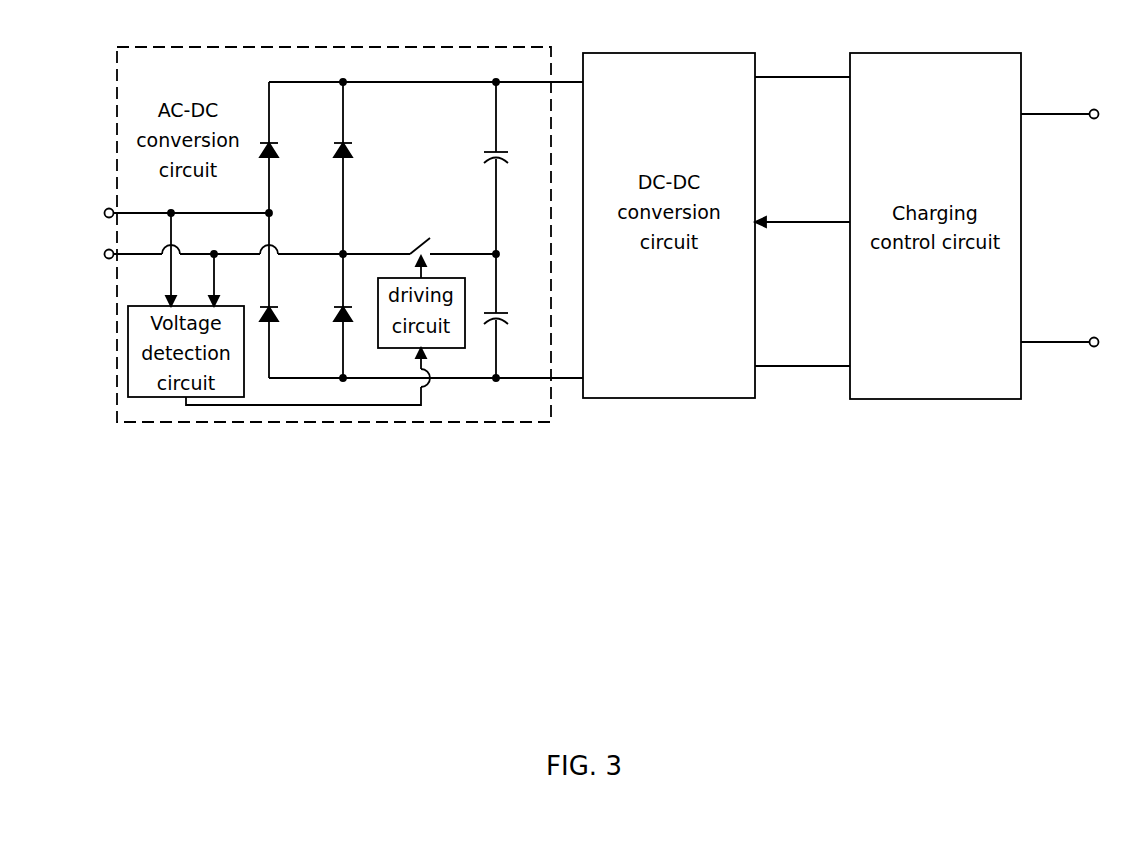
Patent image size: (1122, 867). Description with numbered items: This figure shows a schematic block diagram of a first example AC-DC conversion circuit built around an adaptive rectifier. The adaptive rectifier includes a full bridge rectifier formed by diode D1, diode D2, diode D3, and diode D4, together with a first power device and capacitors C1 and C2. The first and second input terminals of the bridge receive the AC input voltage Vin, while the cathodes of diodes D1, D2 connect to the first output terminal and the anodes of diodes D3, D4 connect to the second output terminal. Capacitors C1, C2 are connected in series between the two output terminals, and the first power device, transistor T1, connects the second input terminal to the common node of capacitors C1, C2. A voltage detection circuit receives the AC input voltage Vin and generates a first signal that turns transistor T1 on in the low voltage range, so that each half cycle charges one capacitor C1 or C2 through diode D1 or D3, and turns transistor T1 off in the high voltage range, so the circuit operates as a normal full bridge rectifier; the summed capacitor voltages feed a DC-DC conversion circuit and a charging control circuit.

The AC input voltage Vin is at (209, 234).
The diode D1 is at (284, 147).
The diode D2 is at (359, 168).
The diode D3 is at (285, 295).
The diode D4 is at (353, 316).
The capacitor C1 is at (510, 168).
The capacitor C2 is at (510, 316).
The transistor T1 is at (421, 234).